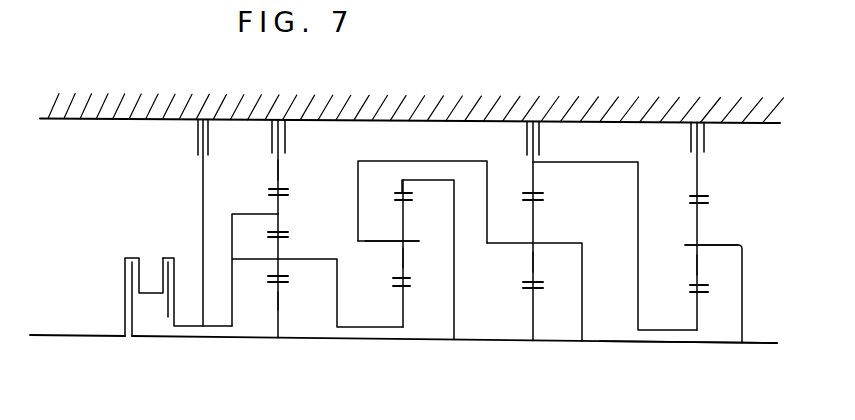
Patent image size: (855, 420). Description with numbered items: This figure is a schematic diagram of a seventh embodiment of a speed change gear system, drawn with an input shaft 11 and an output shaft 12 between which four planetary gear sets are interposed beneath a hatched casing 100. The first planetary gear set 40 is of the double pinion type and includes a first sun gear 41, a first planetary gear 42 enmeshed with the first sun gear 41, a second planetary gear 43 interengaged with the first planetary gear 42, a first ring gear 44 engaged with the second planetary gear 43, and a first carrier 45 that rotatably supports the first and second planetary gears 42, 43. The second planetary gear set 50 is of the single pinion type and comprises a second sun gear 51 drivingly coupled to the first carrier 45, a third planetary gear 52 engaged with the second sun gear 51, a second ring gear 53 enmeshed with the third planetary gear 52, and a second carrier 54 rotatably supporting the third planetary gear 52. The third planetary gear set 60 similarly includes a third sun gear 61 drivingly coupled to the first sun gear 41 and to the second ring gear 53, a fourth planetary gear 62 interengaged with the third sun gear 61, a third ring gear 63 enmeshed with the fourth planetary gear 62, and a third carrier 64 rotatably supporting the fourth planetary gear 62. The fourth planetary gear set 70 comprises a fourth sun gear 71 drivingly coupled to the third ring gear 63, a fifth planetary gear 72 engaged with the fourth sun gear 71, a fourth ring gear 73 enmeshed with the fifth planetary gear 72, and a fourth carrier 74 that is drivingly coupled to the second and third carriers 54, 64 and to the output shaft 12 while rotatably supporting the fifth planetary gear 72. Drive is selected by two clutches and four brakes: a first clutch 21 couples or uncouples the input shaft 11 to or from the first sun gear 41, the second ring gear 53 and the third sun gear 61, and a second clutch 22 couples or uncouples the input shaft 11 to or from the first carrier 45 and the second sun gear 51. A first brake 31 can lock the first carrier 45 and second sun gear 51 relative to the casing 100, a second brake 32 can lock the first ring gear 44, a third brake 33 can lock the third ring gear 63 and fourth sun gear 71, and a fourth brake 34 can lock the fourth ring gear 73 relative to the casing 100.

The casing 100 is at (430, 112).
The input shaft 11 is at (73, 337).
The output shaft 12 is at (670, 345).
The first clutch 21 is at (129, 254).
The second clutch 22 is at (173, 254).
The first brake 31 is at (194, 131).
The second brake 32 is at (268, 131).
The third brake 33 is at (541, 128).
The fourth brake 34 is at (706, 128).
The first planetary gear set 40 is at (280, 314).
The first sun gear 41 is at (278, 300).
The first planetary gear 42 is at (282, 267).
The second planetary gear 43 is at (278, 207).
The first ring gear 44 is at (278, 170).
The first carrier 45 is at (263, 198).
The second planetary gear set 50 is at (405, 312).
The second sun gear 51 is at (403, 302).
The third planetary gear 52 is at (403, 257).
The second ring gear 53 is at (403, 185).
The second carrier 54 is at (392, 228).
The third planetary gear set 60 is at (538, 319).
The third sun gear 61 is at (533, 303).
The fourth planetary gear 62 is at (533, 262).
The third ring gear 63 is at (533, 177).
The third carrier 64 is at (534, 278).
The fourth planetary gear set 70 is at (705, 316).
The fourth sun gear 71 is at (697, 307).
The fifth planetary gear 72 is at (697, 265).
The fourth ring gear 73 is at (698, 171).
The fourth carrier 74 is at (711, 229).